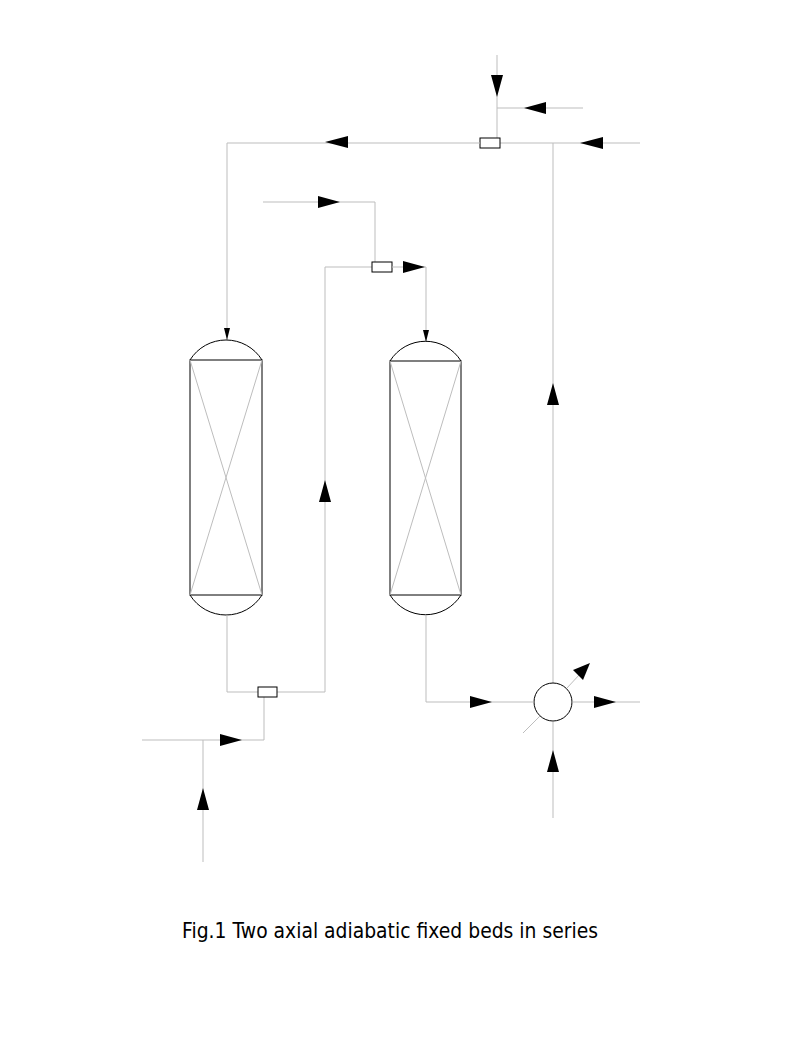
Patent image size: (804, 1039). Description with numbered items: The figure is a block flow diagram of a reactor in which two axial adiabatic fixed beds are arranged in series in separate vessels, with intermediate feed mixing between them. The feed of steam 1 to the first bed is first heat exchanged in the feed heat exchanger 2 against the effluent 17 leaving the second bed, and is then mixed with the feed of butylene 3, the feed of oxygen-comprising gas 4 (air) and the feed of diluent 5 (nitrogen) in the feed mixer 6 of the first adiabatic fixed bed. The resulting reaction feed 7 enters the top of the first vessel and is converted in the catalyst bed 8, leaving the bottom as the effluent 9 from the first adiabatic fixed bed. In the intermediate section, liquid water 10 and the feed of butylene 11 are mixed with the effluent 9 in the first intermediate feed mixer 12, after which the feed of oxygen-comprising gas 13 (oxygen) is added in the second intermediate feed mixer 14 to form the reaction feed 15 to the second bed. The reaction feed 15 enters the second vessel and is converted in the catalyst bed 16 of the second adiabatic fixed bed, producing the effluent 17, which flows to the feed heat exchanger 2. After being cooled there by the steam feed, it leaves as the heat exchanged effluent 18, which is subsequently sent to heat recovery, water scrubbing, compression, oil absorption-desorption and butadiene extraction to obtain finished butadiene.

The feed of steam 1 is at (553, 778).
The feed heat exchanger 2 is at (560, 683).
The feed of butylene 3 is at (618, 143).
The feed of oxygen-comprising gas 4 is at (562, 108).
The feed of diluent 5 is at (496, 70).
The feed mixer 6 is at (480, 140).
The reaction feed 7 is at (227, 300).
The catalyst bed 8 is at (247, 490).
The effluent 9 is at (227, 668).
The liquid water 10 is at (167, 740).
The feed of butylene 11 is at (203, 840).
The first intermediate feed mixer 12 is at (268, 697).
The feed of oxygen-comprising gas 13 is at (345, 202).
The second intermediate feed mixer 14 is at (385, 262).
The reaction feed 15 is at (426, 305).
The catalyst bed 16 is at (449, 490).
The effluent 17 is at (448, 702).
The heat exchanged effluent 18 is at (613, 702).